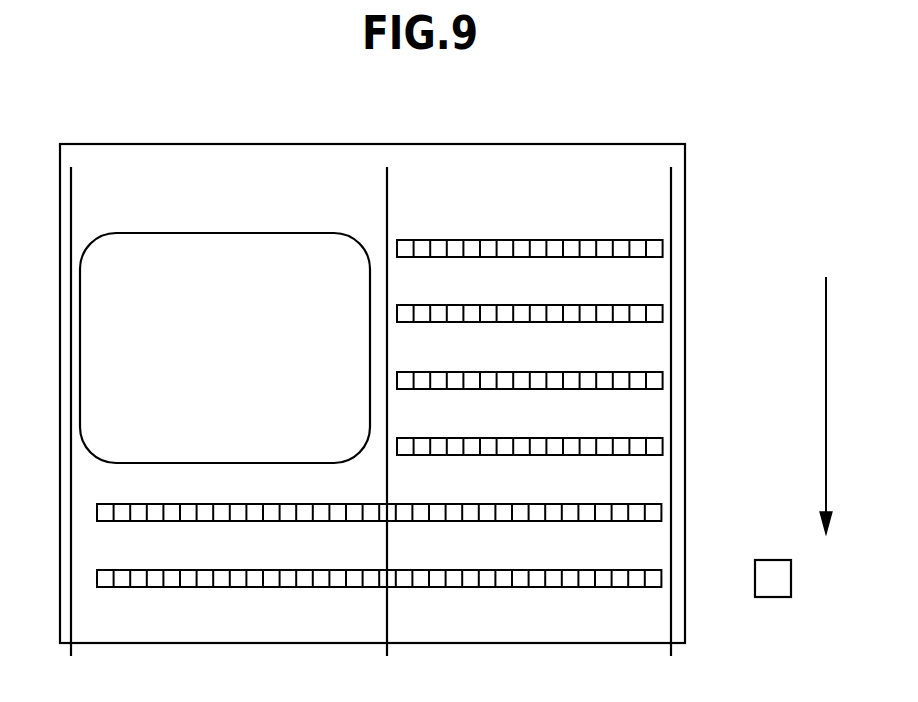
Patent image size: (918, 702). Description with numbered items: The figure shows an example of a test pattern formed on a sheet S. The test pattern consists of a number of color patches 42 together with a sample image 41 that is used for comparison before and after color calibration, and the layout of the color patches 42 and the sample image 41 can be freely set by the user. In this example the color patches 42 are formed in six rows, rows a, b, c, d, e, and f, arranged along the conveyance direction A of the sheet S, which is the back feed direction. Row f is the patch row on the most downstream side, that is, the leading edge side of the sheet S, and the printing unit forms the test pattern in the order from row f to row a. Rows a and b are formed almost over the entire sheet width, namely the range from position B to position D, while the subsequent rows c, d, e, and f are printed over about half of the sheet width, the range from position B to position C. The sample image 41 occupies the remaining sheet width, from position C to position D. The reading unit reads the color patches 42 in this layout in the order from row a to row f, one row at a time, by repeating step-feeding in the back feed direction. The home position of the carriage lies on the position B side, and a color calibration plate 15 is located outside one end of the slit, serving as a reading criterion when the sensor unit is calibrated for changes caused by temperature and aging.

The sheet S is at (90, 186).
The sample image 41 is at (90, 347).
The color patches 42 is at (439, 412).
The row a is at (661, 578).
The row b is at (661, 512).
The row c is at (661, 446).
The row d is at (661, 380).
The row e is at (661, 313).
The row f is at (558, 248).
The color calibration plate 15 is at (773, 590).
The conveyance direction A is at (825, 419).
The position B is at (671, 426).
The position C is at (387, 426).
The position D is at (71, 426).